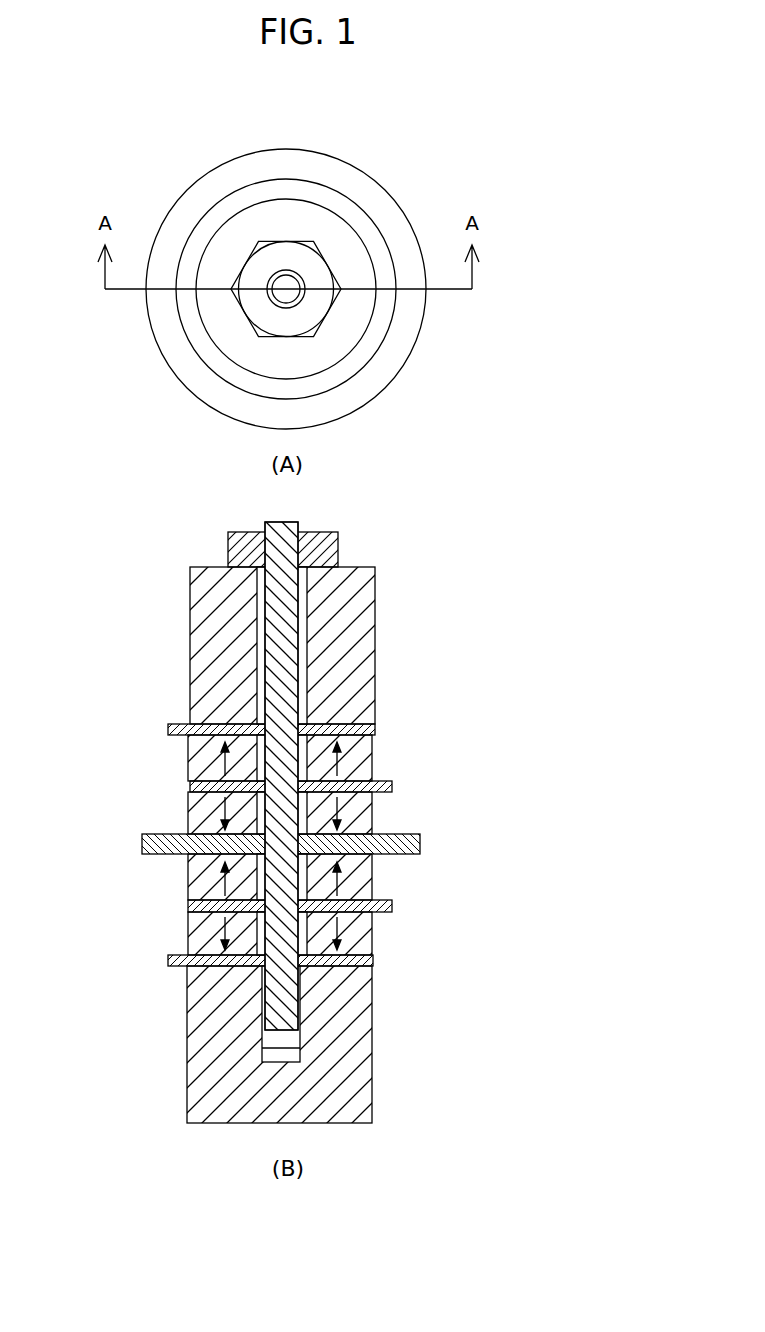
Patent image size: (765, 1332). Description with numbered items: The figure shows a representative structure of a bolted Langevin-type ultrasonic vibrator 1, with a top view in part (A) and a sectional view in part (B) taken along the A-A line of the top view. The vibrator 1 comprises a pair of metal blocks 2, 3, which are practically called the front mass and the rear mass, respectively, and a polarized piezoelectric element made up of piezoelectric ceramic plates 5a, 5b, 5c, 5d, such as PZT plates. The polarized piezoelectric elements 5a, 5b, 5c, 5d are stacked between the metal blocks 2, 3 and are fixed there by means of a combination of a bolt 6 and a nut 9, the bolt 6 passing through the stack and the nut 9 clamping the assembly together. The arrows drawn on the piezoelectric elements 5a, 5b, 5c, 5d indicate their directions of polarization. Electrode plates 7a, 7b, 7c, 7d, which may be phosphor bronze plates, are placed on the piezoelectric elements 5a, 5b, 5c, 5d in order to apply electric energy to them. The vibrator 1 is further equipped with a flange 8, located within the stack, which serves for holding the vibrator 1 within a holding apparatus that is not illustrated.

The bolted Langevin-type ultrasonic vibrator 1 is at (345, 822).
The metal block 2 is at (347, 1060).
The metal block 3 is at (347, 628).
The polarized piezoelectric element 5a is at (355, 935).
The polarized piezoelectric element 5b is at (355, 880).
The polarized piezoelectric element 5c is at (355, 818).
The polarized piezoelectric element 5d is at (355, 758).
The bolt 6 is at (283, 617).
The electrode plate 7a is at (168, 960).
The electrode plate 7b is at (187, 905).
The electrode plate 7c is at (190, 787).
The electrode plate 7d is at (163, 730).
The flange 8 is at (142, 838).
The nut 9 is at (340, 545).